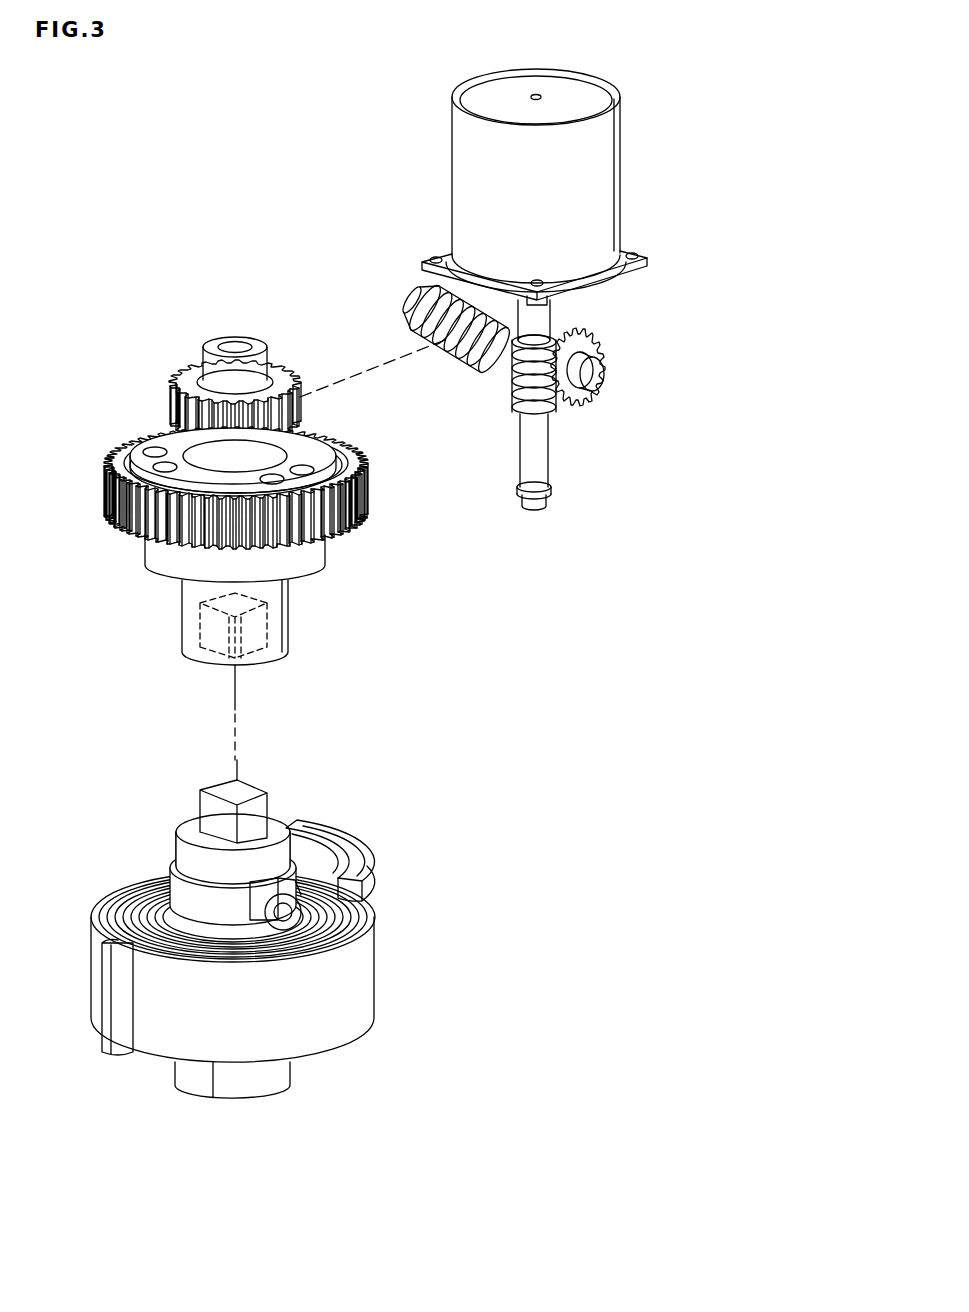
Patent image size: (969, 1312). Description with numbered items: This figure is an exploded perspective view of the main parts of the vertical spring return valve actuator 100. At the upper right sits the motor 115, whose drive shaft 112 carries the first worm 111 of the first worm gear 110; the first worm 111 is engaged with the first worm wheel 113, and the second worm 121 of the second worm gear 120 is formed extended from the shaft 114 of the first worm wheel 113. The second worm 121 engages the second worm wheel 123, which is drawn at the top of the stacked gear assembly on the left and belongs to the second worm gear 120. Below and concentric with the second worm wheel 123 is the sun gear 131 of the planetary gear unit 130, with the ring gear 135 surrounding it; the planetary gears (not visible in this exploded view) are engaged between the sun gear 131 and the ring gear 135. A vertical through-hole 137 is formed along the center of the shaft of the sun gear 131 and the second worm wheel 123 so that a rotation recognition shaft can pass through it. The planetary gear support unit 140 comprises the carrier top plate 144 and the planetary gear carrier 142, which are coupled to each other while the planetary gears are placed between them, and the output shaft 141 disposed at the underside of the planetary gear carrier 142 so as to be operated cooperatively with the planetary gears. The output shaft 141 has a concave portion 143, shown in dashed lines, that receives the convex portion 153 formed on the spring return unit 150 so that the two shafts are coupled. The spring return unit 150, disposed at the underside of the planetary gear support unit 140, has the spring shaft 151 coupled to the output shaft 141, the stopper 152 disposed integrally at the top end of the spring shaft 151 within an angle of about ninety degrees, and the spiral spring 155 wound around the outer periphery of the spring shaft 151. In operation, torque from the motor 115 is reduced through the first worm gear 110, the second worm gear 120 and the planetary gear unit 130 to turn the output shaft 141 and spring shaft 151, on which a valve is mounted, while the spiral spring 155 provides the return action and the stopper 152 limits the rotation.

The vertical spring return valve actuator 100 is at (250, 165).
The first worm gear 110 is at (660, 423).
The first worm 111 is at (552, 413).
The drive shaft 112 is at (540, 321).
The first worm wheel 113 is at (585, 398).
The shaft 114 is at (407, 302).
The motor 115 is at (465, 145).
The second worm gear 120 is at (352, 283).
The second worm 121 is at (410, 338).
The second worm wheel 123 is at (283, 368).
The planetary gear unit 130 is at (155, 352).
The sun gear 131 is at (155, 455).
The ring gear 135 is at (125, 520).
The vertical through-hole 137 is at (235, 345).
The planetary gear support unit 140 is at (140, 595).
The output shaft 141 is at (275, 613).
The planetary gear carrier 142 is at (303, 562).
The concave portion 143 is at (273, 630).
The carrier top plate 144 is at (340, 438).
The spring return unit 150 is at (203, 1108).
The spring shaft 151 is at (257, 1090).
The stopper 152 is at (360, 857).
The convex portion 153 is at (255, 790).
The spiral spring 155 is at (333, 998).